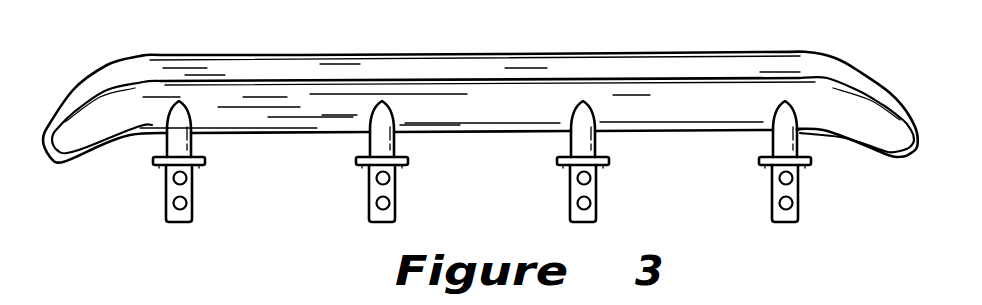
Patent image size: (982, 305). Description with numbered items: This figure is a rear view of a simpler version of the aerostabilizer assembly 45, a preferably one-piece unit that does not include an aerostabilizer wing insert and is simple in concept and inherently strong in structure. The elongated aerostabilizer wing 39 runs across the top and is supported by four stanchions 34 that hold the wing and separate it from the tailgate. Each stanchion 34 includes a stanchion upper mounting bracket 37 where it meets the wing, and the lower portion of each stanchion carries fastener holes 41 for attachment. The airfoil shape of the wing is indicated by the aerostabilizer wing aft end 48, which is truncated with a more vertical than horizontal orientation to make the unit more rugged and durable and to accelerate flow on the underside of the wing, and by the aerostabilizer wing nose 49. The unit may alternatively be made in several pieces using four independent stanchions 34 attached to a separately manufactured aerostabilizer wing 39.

The aerostabilizer wing aft end 48 is at (238, 75).
The aerostabilizer wing 39 is at (537, 118).
The aerostabilizer assembly 45 is at (744, 118).
The aerostabilizer wing nose 49 is at (683, 133).
The stanchion upper mounting bracket 37 is at (405, 155).
The fastener holes 41 is at (370, 212).
The stanchion 34 is at (598, 138).